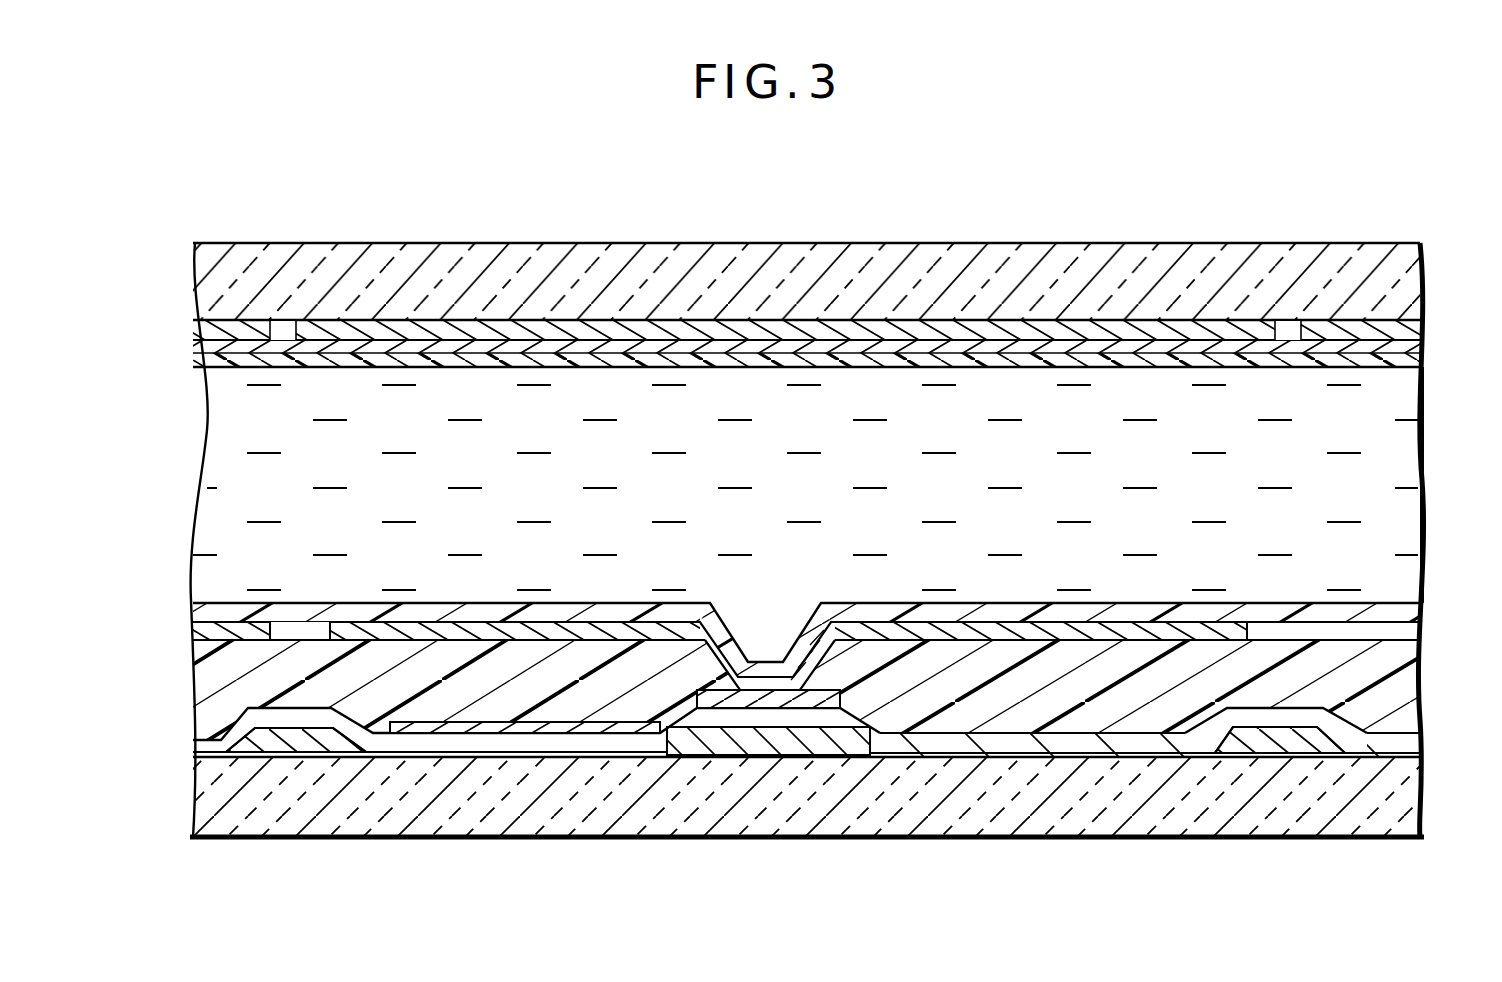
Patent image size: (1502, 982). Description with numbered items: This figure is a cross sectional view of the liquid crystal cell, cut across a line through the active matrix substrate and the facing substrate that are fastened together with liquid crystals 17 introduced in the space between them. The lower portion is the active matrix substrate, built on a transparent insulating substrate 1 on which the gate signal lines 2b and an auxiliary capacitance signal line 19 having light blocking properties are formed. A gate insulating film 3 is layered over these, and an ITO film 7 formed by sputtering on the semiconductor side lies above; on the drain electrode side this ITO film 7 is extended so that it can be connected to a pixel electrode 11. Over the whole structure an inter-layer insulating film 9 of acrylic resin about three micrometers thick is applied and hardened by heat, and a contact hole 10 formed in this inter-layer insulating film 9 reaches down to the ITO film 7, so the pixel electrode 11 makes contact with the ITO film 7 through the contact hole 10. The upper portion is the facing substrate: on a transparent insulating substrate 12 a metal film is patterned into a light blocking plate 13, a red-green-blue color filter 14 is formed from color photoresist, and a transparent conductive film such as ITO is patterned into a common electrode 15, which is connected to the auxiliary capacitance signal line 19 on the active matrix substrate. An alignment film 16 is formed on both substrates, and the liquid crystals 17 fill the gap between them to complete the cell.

The transparent insulating substrate 1 is at (914, 812).
The gate signal line 2b is at (284, 757).
The gate insulating film 3 is at (428, 757).
The ITO film 7 is at (570, 740).
The inter-layer insulating film 9 is at (1405, 692).
The contact hole 10 is at (771, 610).
The pixel electrode 11 is at (1068, 625).
The transparent insulating substrate 12 is at (912, 270).
The light blocking plate 13 is at (244, 325).
The color filter 14 is at (622, 332).
The common electrode 15 is at (423, 347).
The alignment film 16 is at (1425, 610).
The liquid crystals 17 is at (232, 428).
The auxiliary capacitance signal line 19 is at (762, 745).